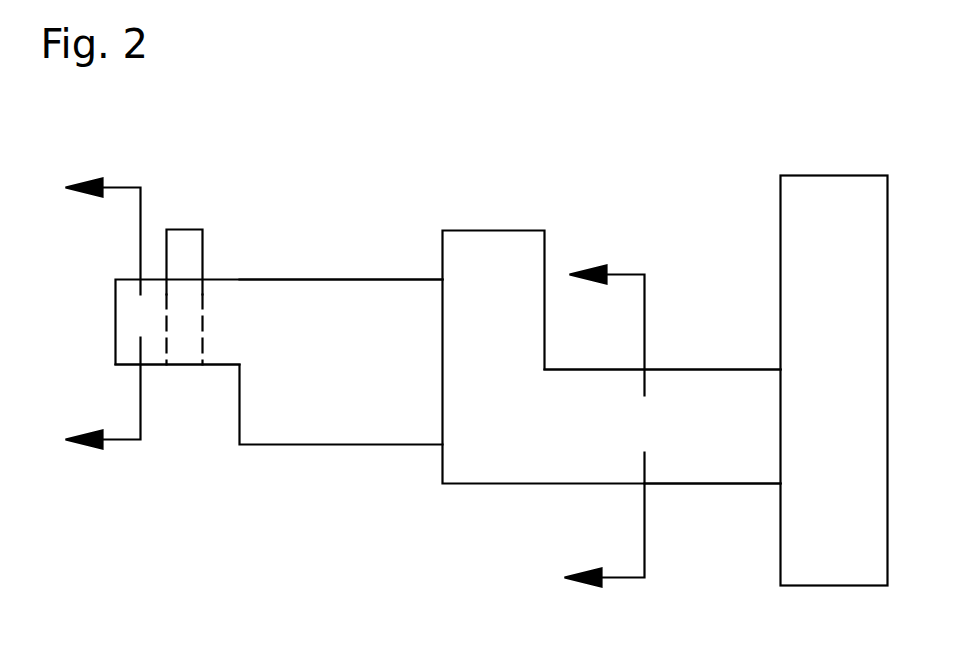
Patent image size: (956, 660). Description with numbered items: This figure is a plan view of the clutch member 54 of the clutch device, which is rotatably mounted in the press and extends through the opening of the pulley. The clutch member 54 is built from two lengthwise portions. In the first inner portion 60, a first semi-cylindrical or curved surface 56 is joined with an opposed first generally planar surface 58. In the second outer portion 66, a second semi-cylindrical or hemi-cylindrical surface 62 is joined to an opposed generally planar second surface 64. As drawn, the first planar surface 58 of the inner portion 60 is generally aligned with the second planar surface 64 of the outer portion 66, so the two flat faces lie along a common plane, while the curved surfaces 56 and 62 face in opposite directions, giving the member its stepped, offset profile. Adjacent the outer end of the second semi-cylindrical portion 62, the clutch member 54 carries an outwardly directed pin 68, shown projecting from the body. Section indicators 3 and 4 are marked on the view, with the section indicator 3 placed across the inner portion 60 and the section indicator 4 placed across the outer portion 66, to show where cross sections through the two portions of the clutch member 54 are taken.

The section line 3- 3 is at (605, 431).
The section line 4- 4 is at (107, 316).
The clutch member 54 is at (479, 481).
The first semi-cylindrical surface 56 is at (682, 482).
The first planar surface 58 is at (702, 367).
The first inner portion 60 is at (744, 482).
The second semi-cylindrical surface 62 is at (270, 277).
The second planar surface 64 is at (197, 362).
The second outer portion 66 is at (365, 277).
The pin 68 is at (185, 227).